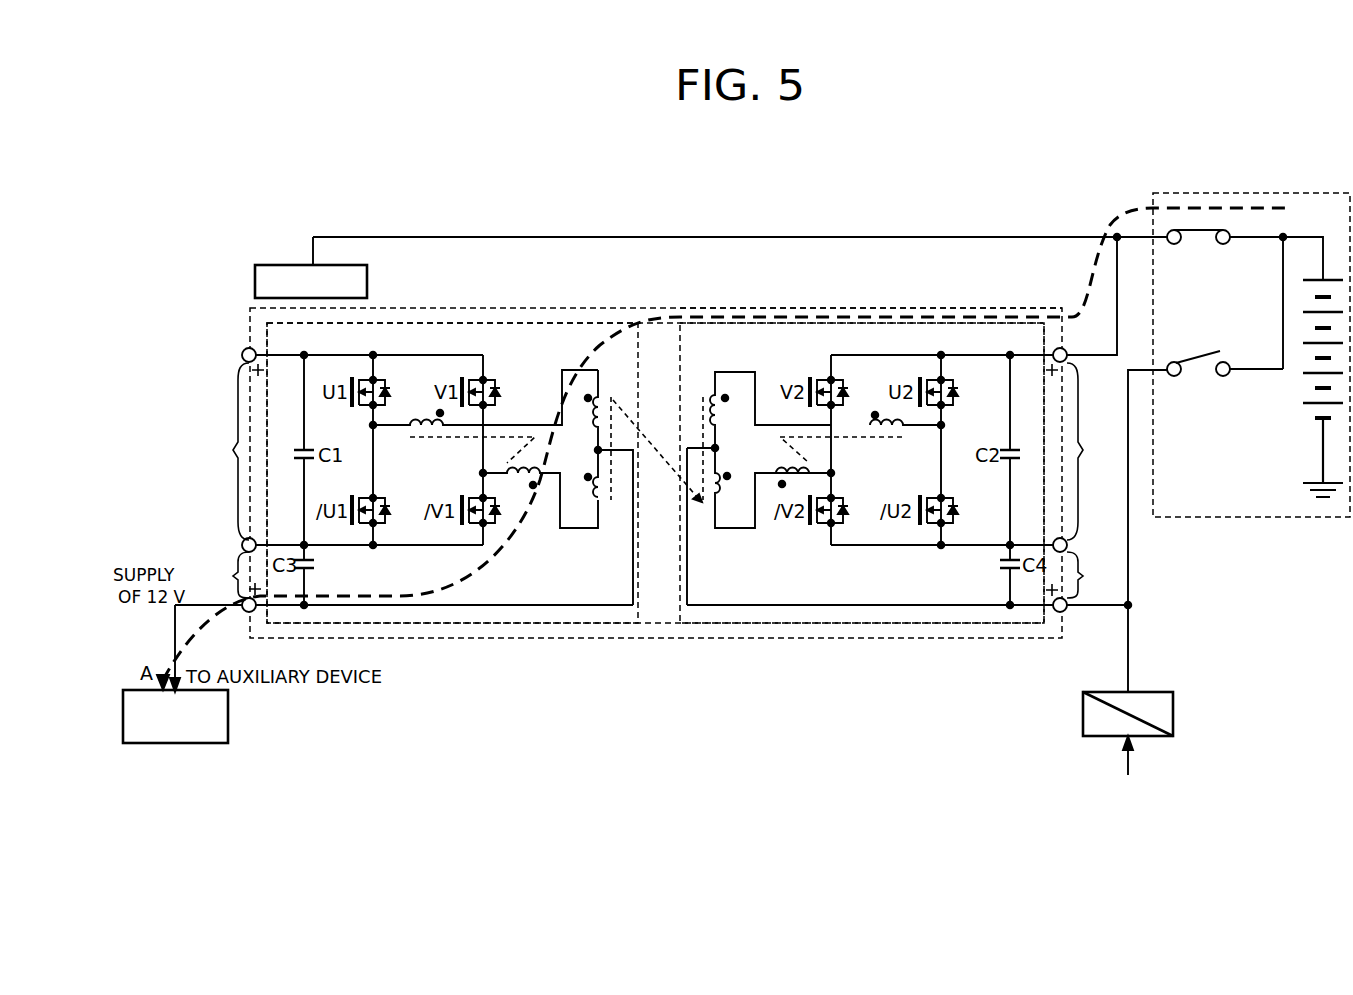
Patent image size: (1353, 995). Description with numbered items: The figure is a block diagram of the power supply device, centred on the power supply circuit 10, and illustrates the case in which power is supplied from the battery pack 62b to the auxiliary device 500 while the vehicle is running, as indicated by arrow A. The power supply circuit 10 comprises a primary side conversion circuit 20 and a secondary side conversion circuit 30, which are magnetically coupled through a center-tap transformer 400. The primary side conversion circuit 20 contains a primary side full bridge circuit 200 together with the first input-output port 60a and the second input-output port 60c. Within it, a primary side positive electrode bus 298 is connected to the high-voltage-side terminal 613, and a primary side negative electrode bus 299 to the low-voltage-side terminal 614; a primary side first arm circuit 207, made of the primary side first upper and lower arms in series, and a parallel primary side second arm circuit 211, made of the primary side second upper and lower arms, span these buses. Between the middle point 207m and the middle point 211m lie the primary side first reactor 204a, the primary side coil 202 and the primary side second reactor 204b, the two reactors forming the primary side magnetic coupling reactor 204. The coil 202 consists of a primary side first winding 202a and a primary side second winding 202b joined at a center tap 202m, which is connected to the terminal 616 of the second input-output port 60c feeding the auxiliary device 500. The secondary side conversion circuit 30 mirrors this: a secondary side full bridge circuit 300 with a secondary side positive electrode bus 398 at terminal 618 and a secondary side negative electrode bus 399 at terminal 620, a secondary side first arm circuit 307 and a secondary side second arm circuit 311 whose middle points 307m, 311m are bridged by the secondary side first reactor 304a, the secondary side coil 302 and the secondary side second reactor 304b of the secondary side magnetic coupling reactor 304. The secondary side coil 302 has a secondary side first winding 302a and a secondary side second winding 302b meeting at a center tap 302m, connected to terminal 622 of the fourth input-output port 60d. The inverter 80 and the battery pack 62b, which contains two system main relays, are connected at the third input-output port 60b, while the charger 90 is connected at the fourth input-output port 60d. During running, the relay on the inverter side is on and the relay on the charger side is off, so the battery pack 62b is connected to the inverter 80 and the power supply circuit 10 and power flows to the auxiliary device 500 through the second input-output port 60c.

The power supply circuit 10 is at (962, 322).
The primary side conversion circuit 20 is at (443, 323).
The secondary side conversion circuit 30 is at (870, 307).
The first input-output port 60a is at (222, 451).
The third input-output port 60b is at (1092, 451).
The second input-output port 60c is at (221, 575).
The fourth input-output port 60d is at (1092, 575).
The battery pack 62b is at (1300, 193).
The inverter 80 is at (367, 282).
The charger 90 is at (1150, 692).
The primary side full bridge circuit 200 is at (520, 322).
The primary side coil 202 is at (579, 447).
The primary side first winding 202a is at (590, 408).
The primary side second winding 202b is at (595, 502).
The center tap 202m is at (561, 391).
The primary side magnetic coupling reactor 204 is at (485, 460).
The primary side first reactor 204a is at (427, 417).
The primary side second reactor 204b is at (524, 482).
The primary side first arm circuit 207 is at (369, 525).
The middle point of the primary side first arm circuit 207m is at (367, 427).
The primary side second arm circuit 211 is at (480, 525).
The middle point of the primary side second arm circuit 211m is at (480, 474).
The primary side positive electrode bus 298 is at (334, 356).
The primary side negative electrode bus 299 is at (333, 547).
The secondary side full bridge circuit 300 is at (800, 322).
The secondary side coil 302 is at (764, 427).
The secondary side first winding 302a is at (724, 402).
The secondary side second winding 302b is at (713, 502).
The center tap 302m is at (718, 449).
The secondary side magnetic coupling reactor 304 is at (848, 456).
The secondary side first reactor 304a is at (875, 418).
The secondary side second reactor 304b is at (790, 487).
The secondary side first arm circuit 307 is at (915, 525).
The middle point of the secondary side first arm circuit 307m is at (944, 426).
The secondary side second arm circuit 311 is at (828, 525).
The middle point of the secondary side second arm circuit 311m is at (835, 474).
The secondary side positive electrode bus 398 is at (962, 356).
The secondary side negative electrode bus 399 is at (977, 548).
The transformer 400 is at (658, 425).
The auxiliary device 500 is at (229, 717).
The high-voltage-side terminal of the first input-output port 613 is at (244, 349).
The low-voltage-side terminal of the first and second input-output ports 614 is at (256, 540).
The high-voltage-side terminal of the second input-output port 616 is at (244, 612).
The high-voltage-side terminal of the third input-output port 618 is at (1066, 350).
The low-voltage-side terminal of the third and fourth input-output ports 620 is at (1053, 542).
The high-voltage-side terminal of the fourth input-output port 622 is at (1066, 612).